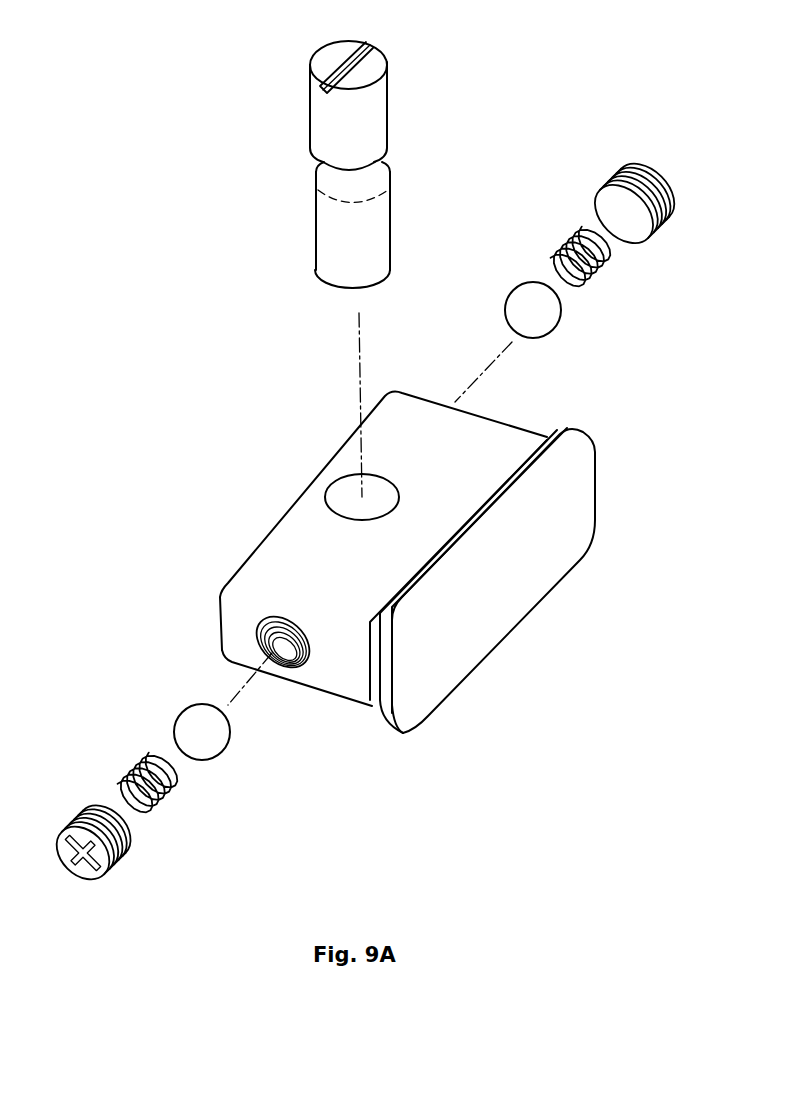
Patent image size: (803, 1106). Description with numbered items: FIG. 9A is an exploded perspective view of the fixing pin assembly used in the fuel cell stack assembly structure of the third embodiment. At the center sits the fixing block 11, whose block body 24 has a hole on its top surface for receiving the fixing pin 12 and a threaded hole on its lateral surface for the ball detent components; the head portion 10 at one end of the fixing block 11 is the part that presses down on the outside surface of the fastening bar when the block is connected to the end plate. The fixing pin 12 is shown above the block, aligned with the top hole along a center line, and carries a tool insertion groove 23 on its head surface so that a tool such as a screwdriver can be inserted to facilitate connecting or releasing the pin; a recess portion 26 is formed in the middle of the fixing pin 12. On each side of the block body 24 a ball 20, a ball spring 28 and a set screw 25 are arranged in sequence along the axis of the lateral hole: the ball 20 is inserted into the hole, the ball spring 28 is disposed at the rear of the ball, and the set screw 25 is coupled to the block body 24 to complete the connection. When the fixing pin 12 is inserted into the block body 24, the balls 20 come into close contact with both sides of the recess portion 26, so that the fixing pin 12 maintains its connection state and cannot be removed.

The head portion 10 is at (572, 498).
The fixing block 11 is at (552, 588).
The fixing pin 12 is at (365, 108).
The ball 20 is at (532, 297).
The tool insertion groove 23 is at (343, 53).
The block body 24 is at (345, 672).
The set screw 25 is at (622, 178).
The recess portion 26 is at (330, 174).
The ball spring 28 is at (567, 230).